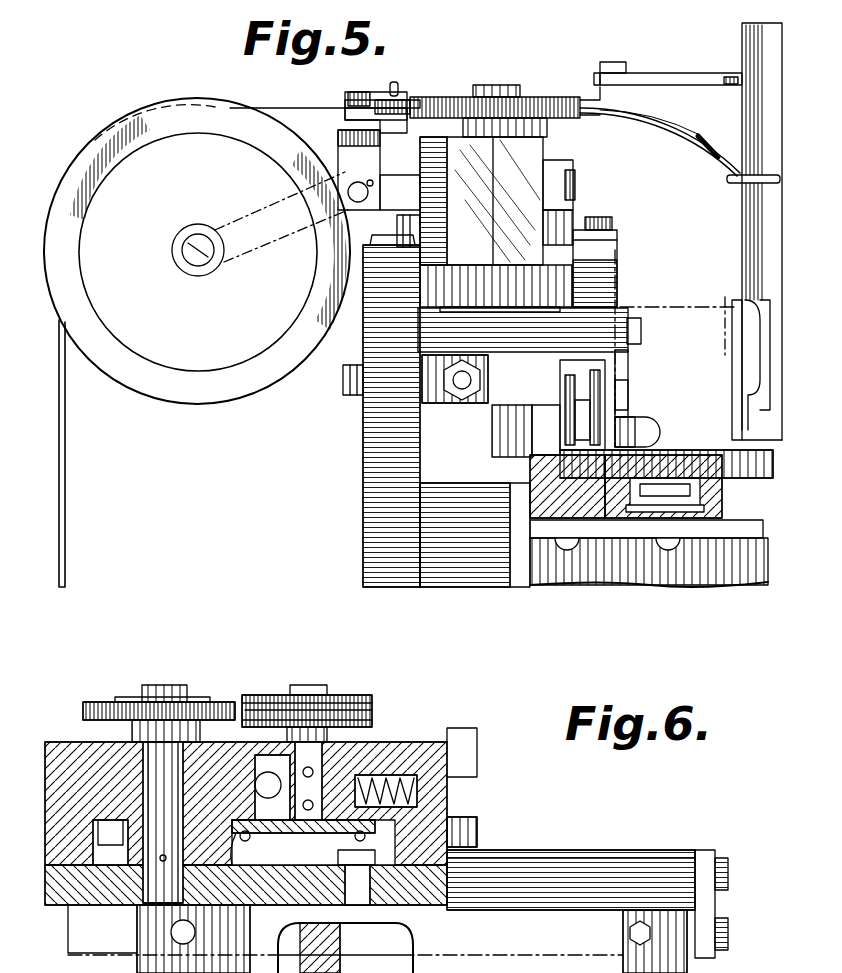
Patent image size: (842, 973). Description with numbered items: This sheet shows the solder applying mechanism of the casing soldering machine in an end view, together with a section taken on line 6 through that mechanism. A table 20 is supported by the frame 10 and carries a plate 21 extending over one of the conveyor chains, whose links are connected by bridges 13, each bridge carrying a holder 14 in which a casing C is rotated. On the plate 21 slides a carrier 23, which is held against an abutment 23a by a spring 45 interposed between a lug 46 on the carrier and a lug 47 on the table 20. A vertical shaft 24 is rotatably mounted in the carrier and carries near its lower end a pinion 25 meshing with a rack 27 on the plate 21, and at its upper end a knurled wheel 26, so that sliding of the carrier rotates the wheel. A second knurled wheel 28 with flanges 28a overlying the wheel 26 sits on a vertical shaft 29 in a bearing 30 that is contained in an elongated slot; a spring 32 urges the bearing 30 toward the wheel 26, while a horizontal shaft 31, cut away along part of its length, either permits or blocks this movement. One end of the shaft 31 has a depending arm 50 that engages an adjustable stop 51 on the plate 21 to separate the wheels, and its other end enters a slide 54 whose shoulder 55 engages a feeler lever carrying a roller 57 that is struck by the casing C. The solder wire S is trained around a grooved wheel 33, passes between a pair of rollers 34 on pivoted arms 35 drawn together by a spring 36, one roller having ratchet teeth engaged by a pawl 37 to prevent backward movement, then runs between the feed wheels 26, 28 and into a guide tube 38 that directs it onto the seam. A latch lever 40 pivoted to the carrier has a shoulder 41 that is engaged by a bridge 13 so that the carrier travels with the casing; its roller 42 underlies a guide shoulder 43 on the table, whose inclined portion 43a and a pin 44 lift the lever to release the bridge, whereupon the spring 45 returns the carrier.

In FIG. 5, the section line 6— 6 is at (478, 56).
In FIG. 5, the grooved wheel 33 is at (190, 395).
In FIG. 5, the solder ribbon or wire S is at (59, 455).
In FIG. 5, the casing C is at (752, 40).
In FIG. 5, the holder 14 is at (748, 262).
In FIG. 5, the roller 57 is at (733, 86).
In FIG. 5, the pawl 37 is at (345, 102).
In FIG. 5, the pivoted arms 35 is at (345, 116).
In FIG. 5, the spring 36 is at (392, 88).
In FIG. 5, the rollers 34 is at (407, 100).
In FIG. 5, the knurled wheel 26 is at (430, 100).
In FIG. 6, the knurled wheel 26 is at (83, 710).
In FIG. 5, the slide 54 is at (435, 155).
In FIG. 5, the rack 27 is at (397, 228).
In FIG. 6, the rack 27 is at (478, 830).
In FIG. 5, the shaft 31 is at (577, 180).
In FIG. 6, the shaft 31 is at (238, 800).
In FIG. 5, the depending arm 50 is at (560, 216).
In FIG. 5, the pinion 25 is at (590, 225).
In FIG. 6, the pinion 25 is at (110, 832).
In FIG. 5, the stop 51 is at (617, 240).
In FIG. 5, the guide tube 38 is at (680, 140).
In FIG. 5, the carrier 23 is at (430, 285).
In FIG. 6, the carrier 23 is at (420, 750).
In FIG. 5, the table 20 is at (370, 516).
In FIG. 5, the plate 21 is at (570, 325).
In FIG. 6, the plate 21 is at (78, 937).
In FIG. 5, the lug 47 is at (434, 405).
In FIG. 5, the lug 46 is at (478, 400).
In FIG. 5, the frame 10 is at (472, 578).
In FIG. 5, the pin 44 is at (560, 432).
In FIG. 5, the latch lever 40 is at (585, 425).
In FIG. 5, the shoulder 41 is at (590, 455).
In FIG. 5, the bridge 13 is at (700, 460).
In FIG. 5, the inclined portion 43a is at (628, 382).
In FIG. 5, the guide shoulder 43 is at (630, 402).
In FIG. 5, the roller 42 is at (630, 425).
In FIG. 6, the second knurled wheel 28 is at (360, 697).
In FIG. 6, the flanges 28a is at (366, 716).
In FIG. 6, the vertical shaft 24 is at (158, 870).
In FIG. 6, the bearing 30 is at (330, 760).
In FIG. 6, the vertical shaft 29 is at (300, 790).
In FIG. 6, the spring 32 is at (420, 790).
In FIG. 6, the shoulder 55 is at (478, 730).
In FIG. 6, the abutment 23a is at (705, 905).
In FIG. 6, the spring 45 is at (320, 952).